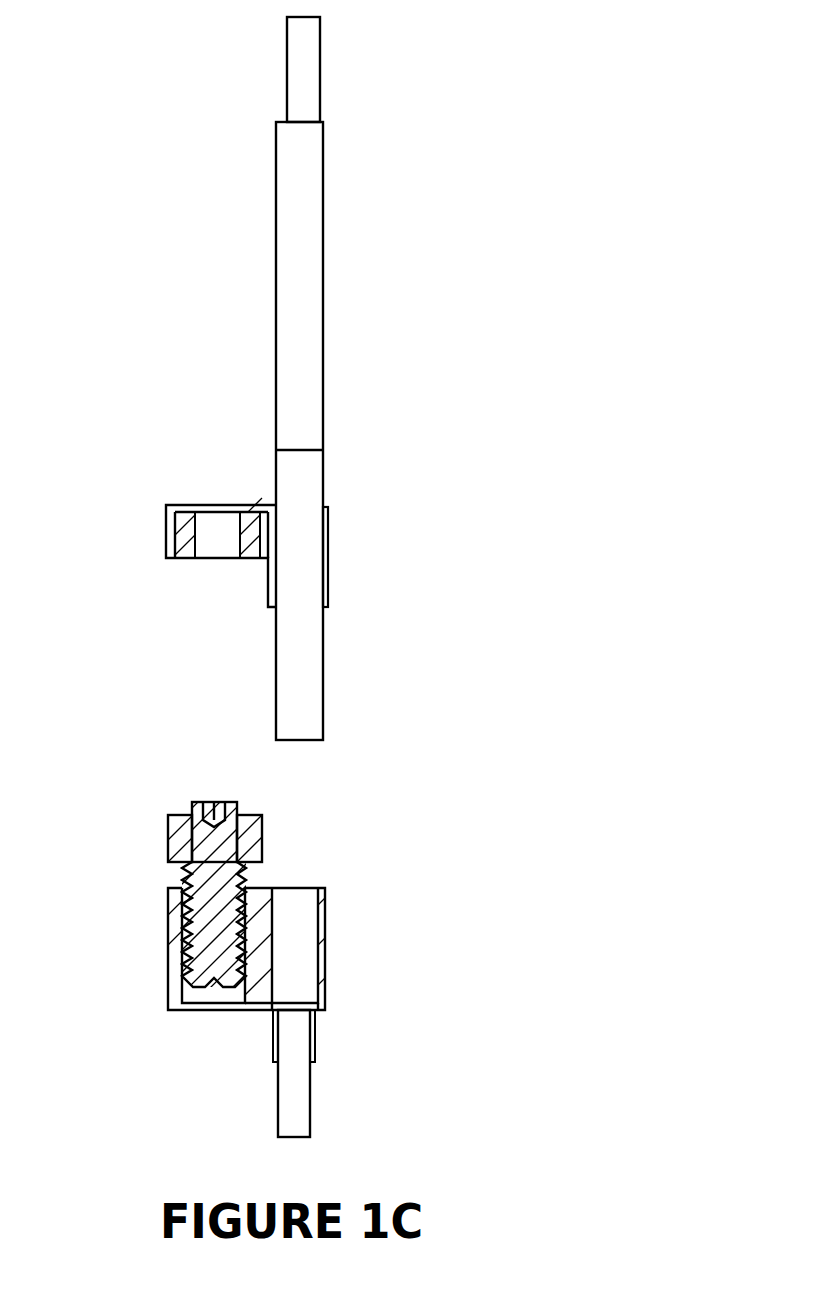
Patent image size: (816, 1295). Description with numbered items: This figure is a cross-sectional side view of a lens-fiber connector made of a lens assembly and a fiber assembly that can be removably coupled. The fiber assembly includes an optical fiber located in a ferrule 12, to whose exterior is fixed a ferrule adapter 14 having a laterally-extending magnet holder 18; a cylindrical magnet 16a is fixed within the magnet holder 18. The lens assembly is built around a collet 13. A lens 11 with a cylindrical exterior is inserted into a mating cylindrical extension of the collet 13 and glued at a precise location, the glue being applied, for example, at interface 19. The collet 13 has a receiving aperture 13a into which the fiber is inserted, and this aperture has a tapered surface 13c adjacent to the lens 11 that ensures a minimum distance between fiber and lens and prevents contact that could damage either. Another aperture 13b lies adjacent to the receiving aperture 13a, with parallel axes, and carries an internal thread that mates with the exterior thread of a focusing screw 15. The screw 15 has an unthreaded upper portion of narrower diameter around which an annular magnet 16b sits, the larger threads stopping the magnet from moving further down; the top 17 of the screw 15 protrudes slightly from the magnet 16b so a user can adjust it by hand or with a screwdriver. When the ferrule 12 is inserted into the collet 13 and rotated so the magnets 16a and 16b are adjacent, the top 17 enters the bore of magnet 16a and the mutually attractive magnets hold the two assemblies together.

The lens 11 is at (312, 1090).
The ferrule 12 is at (326, 407).
The collet 13 is at (327, 950).
The receiving aperture 13a is at (301, 907).
The aperture 13b is at (195, 992).
The tapered surface 13c is at (270, 1010).
The ferrule adapter 14 is at (330, 547).
The focusing screw 15 is at (203, 908).
The cylindrical magnet 16a is at (181, 557).
The annular magnet 16b is at (266, 835).
The top of the screw 17 is at (213, 800).
The magnet holder 18 is at (213, 498).
The interface 19 is at (272, 1065).